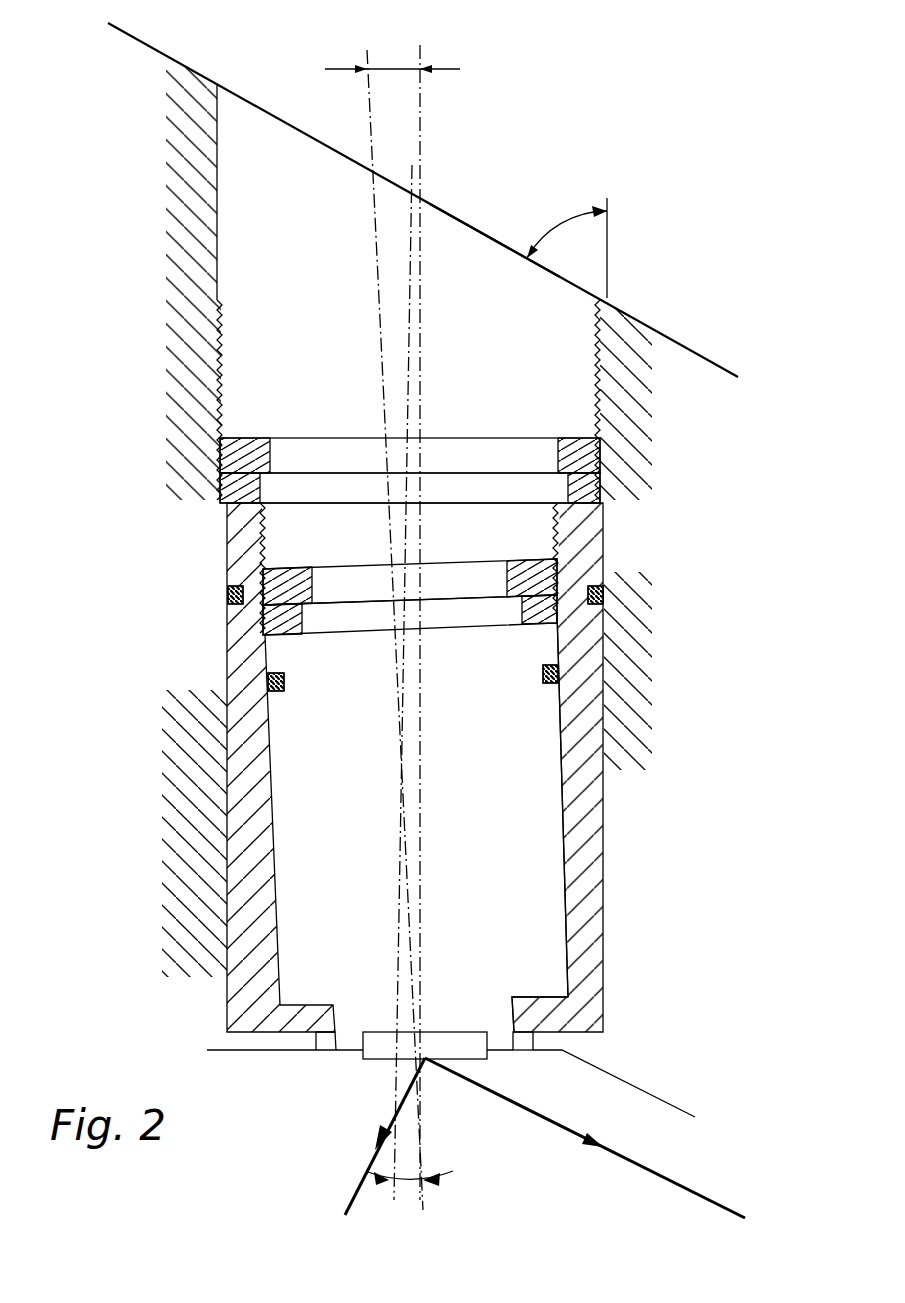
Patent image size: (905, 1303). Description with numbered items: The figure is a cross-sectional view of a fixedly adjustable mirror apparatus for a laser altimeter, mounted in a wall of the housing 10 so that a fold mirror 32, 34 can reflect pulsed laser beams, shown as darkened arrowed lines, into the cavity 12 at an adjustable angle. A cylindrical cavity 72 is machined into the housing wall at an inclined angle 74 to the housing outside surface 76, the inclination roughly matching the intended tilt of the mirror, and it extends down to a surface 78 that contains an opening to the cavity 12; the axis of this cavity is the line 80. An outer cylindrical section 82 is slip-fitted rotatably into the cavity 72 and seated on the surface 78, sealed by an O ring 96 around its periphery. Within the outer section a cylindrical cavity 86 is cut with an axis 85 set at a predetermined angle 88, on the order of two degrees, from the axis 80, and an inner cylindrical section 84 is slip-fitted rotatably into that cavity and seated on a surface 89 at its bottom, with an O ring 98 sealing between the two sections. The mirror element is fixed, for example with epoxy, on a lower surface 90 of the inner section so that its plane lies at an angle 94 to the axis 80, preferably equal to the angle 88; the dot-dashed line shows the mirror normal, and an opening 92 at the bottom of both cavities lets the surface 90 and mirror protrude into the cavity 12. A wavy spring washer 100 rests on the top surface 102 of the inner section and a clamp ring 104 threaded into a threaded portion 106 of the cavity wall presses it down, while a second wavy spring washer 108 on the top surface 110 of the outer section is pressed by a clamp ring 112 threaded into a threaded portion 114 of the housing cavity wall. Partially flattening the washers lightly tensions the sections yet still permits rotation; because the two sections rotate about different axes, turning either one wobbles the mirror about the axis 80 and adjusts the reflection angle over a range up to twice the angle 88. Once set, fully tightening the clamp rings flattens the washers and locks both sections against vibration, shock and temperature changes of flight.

The housing 10 is at (190, 340).
The cavity 12 is at (290, 1132).
The fold mirror 32 is at (400, 1013).
The fold mirror 34 is at (395, 1032).
The cylindrical cavity 72 is at (268, 180).
The inclined angle 74 is at (562, 232).
The housing outside surface 76 is at (480, 230).
The surface 78 is at (580, 1045).
The axis 80 is at (421, 152).
The outer cylindrical section 82 is at (597, 563).
The inner cylindrical section 84 is at (374, 836).
The axis 85 is at (368, 125).
The cylindrical cavity 86 is at (553, 855).
The angle 88 is at (396, 68).
The surface 89 is at (548, 997).
The surface 90 is at (505, 1053).
The opening 92 is at (337, 1042).
The angle 94 is at (410, 1183).
The O ring 96 is at (605, 591).
The O ring 98 is at (548, 690).
The wavy spring washer 100 is at (365, 617).
The top surface 102 is at (512, 632).
The clamp ring 104 is at (510, 580).
The threaded portion 106 is at (262, 545).
The wavy spring washer 108 is at (262, 490).
The top surface 110 is at (568, 490).
The clamp ring 112 is at (550, 455).
The threaded portion 114 is at (223, 387).